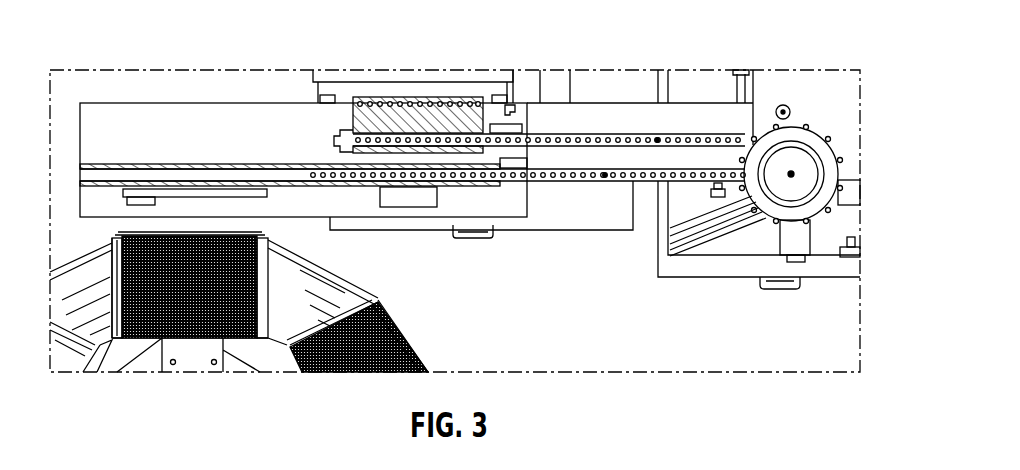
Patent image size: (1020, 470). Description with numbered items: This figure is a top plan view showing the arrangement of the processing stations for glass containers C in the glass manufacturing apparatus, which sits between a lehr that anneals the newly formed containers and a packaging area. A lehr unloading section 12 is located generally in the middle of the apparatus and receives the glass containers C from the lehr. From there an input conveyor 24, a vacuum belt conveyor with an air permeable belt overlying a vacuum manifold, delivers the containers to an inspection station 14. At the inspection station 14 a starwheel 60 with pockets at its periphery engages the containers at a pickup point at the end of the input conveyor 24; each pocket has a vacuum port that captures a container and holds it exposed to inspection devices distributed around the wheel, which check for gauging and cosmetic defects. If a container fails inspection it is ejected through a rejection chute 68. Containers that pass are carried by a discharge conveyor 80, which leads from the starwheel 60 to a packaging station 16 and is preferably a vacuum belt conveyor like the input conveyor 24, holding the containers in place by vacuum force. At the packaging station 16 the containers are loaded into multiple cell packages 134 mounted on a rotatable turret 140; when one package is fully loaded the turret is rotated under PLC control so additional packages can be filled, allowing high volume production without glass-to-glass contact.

The lehr unloading section 12 is at (461, 63).
The inspection station 14 is at (872, 82).
The packaging station 16 is at (42, 236).
The input conveyor 24 is at (611, 133).
The glass containers C is at (651, 134).
The starwheel 60 is at (838, 176).
The rejection chute 68 is at (693, 252).
The discharge conveyor 80 is at (560, 183).
The rotatable turret 140 is at (328, 287).
The cell packages 134 is at (393, 325).